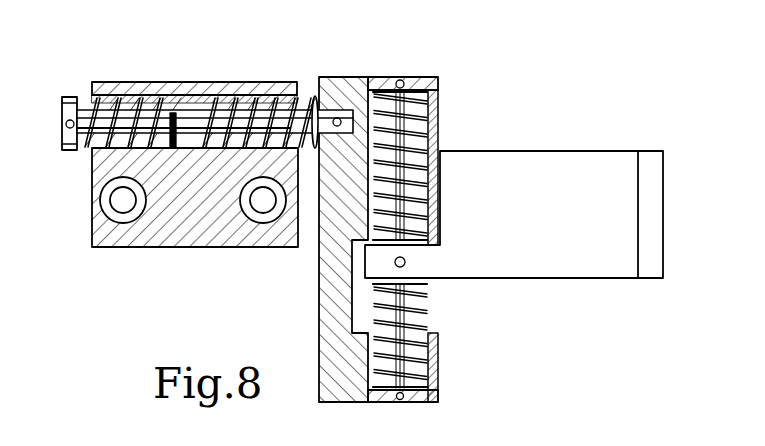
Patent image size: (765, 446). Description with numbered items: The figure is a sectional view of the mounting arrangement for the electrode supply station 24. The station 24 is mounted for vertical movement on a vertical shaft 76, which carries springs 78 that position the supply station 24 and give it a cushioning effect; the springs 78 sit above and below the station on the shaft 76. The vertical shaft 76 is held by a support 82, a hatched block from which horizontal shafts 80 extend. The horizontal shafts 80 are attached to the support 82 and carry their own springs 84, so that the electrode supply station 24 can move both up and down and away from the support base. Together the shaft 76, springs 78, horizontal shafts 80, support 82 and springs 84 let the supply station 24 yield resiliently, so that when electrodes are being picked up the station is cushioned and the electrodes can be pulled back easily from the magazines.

The electrode supply station 24 is at (563, 162).
The shaft 76 is at (438, 104).
The springs 78 is at (434, 128).
The horizontal shafts 80 is at (122, 118).
The support 82 is at (335, 302).
The springs 84 is at (157, 100).